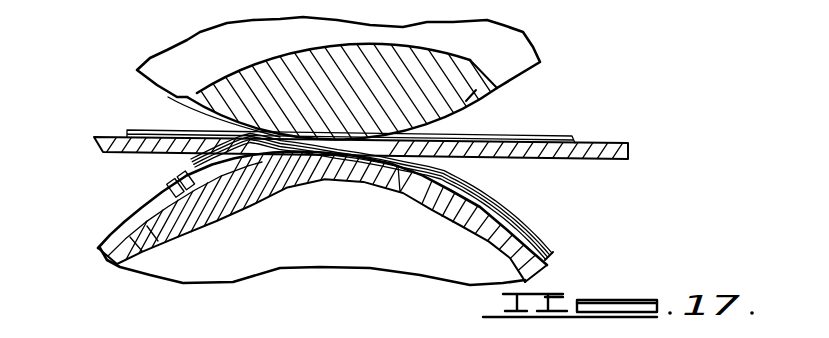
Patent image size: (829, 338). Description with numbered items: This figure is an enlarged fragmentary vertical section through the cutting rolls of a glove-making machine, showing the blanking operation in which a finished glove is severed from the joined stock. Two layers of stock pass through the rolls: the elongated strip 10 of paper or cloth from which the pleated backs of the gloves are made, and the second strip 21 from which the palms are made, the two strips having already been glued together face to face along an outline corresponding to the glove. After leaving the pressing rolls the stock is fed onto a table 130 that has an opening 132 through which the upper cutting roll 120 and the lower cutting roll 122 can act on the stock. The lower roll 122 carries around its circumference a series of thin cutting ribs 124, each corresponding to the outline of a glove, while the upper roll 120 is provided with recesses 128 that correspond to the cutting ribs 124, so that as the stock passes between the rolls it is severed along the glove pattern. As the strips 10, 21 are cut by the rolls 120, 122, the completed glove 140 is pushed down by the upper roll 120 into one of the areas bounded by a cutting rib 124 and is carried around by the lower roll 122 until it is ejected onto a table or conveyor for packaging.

The elongated strip 10 is at (483, 198).
The second strip 21 is at (483, 236).
The upper cutting roll 120 is at (517, 65).
The lower cutting roll 122 is at (540, 273).
The cutting ribs 124 is at (150, 180).
The recesses 128 is at (224, 111).
The table 130 is at (105, 152).
The opening 132 is at (257, 158).
The completed glove 140 is at (549, 239).